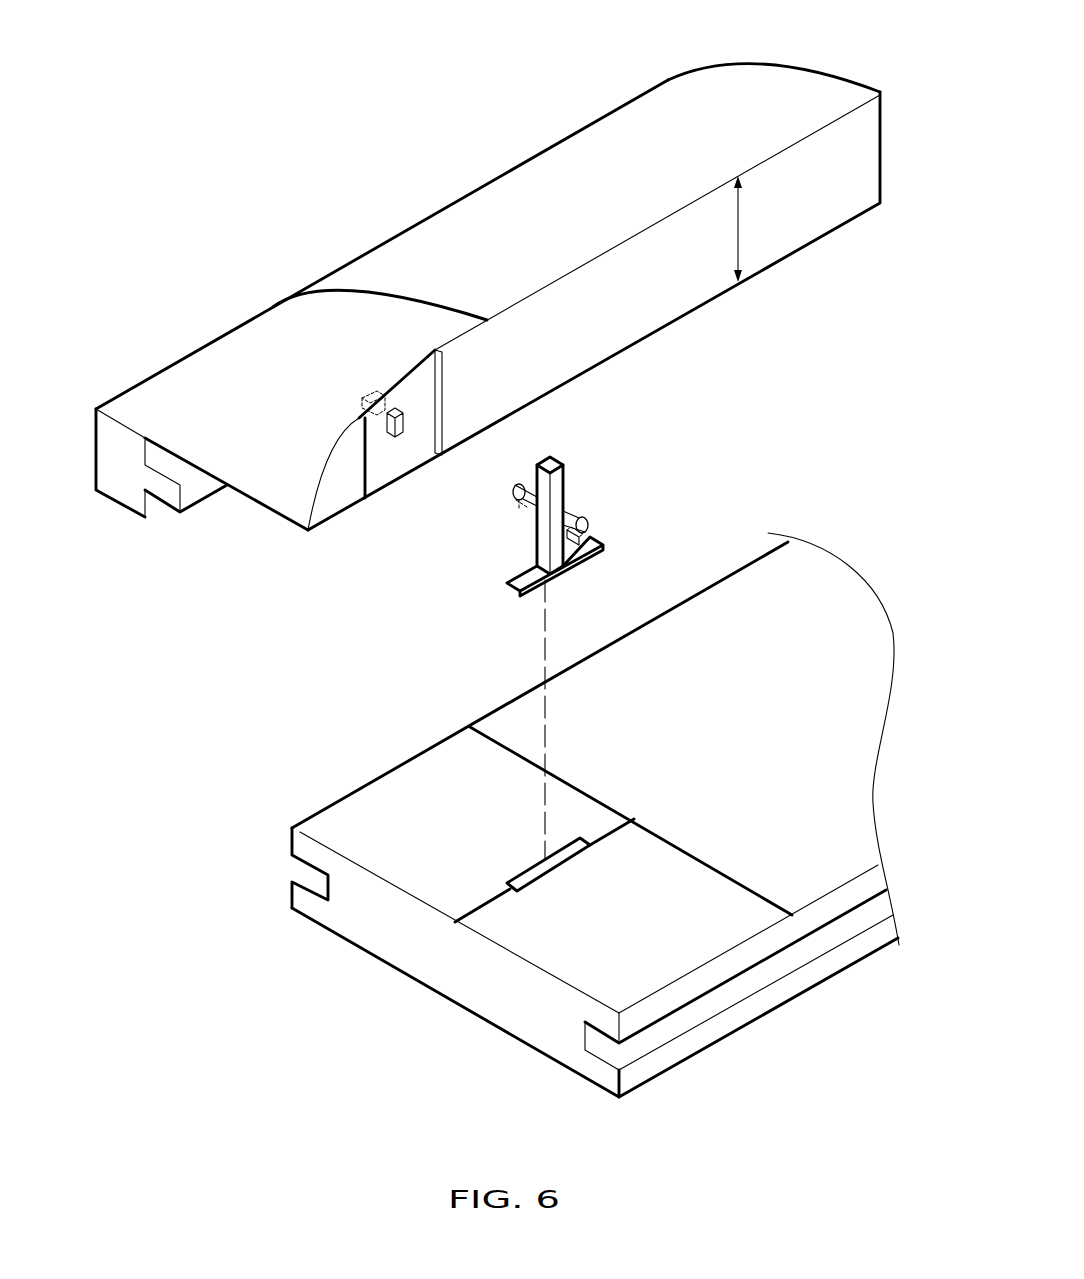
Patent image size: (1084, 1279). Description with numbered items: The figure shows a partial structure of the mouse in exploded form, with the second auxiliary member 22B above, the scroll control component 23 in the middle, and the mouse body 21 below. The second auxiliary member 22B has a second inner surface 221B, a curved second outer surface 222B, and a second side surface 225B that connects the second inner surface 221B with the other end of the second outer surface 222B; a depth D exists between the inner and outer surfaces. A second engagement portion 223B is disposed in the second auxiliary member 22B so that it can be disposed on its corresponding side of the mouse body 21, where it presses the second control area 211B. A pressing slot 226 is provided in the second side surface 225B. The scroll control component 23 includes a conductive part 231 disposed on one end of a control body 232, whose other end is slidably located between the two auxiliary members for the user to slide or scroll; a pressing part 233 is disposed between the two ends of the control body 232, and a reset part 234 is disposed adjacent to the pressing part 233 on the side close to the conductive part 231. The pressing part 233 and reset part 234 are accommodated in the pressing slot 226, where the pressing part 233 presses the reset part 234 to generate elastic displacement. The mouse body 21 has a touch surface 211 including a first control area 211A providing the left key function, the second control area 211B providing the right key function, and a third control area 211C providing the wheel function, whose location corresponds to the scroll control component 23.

The second auxiliary member 22B is at (488, 301).
The second outer surface 222B is at (500, 200).
The second side surface 225B is at (667, 302).
The second inner surface 221B is at (263, 510).
The second engagement portion 223B is at (168, 490).
The pressing slot 226 is at (397, 423).
The depth D is at (750, 229).
The scroll control component 23 is at (616, 514).
The conductive part 231 is at (597, 545).
The control body 232 is at (553, 457).
The pressing part 233 is at (577, 510).
The reset part 234 is at (580, 530).
The mouse body 21 is at (830, 598).
The touch surface 211 is at (580, 967).
The first control area 211A is at (283, 1003).
The second control area 211B is at (373, 855).
The third control area 211C is at (520, 890).